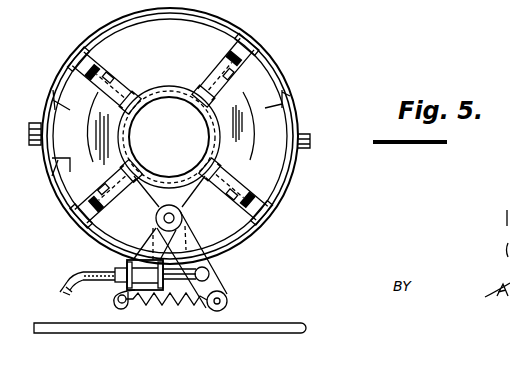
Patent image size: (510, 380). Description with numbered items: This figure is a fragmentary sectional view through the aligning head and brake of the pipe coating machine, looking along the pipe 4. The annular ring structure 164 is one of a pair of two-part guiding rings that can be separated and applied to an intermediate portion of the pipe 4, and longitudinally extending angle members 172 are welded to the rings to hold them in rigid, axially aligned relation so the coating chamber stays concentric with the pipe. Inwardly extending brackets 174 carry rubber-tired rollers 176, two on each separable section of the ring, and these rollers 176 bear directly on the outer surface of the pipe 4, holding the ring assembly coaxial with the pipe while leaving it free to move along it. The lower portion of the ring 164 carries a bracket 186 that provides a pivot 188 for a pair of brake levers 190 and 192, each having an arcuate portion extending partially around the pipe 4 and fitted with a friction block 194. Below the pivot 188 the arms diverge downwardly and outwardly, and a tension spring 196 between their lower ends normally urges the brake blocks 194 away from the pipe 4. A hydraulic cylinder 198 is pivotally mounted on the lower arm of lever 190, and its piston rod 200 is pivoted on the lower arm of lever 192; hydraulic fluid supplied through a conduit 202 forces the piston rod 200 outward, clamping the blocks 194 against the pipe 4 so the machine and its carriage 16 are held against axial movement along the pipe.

The annular ring structure 164 is at (232, 12).
The angle members 172 is at (46, 108).
The brackets 174 is at (94, 48).
The rubber-tired rollers 176 is at (98, 67).
The friction block 194 is at (190, 92).
The pipe 4 is at (160, 174).
The brake lever 190 is at (94, 108).
The brake lever 192 is at (244, 118).
The pivot 188 is at (160, 218).
The bracket 186 is at (190, 231).
The hydraulic cylinder 198 is at (122, 260).
The piston rod 200 is at (212, 279).
The conduit 202 is at (80, 272).
The tension spring 196 is at (223, 306).
The carriage 16 is at (278, 322).